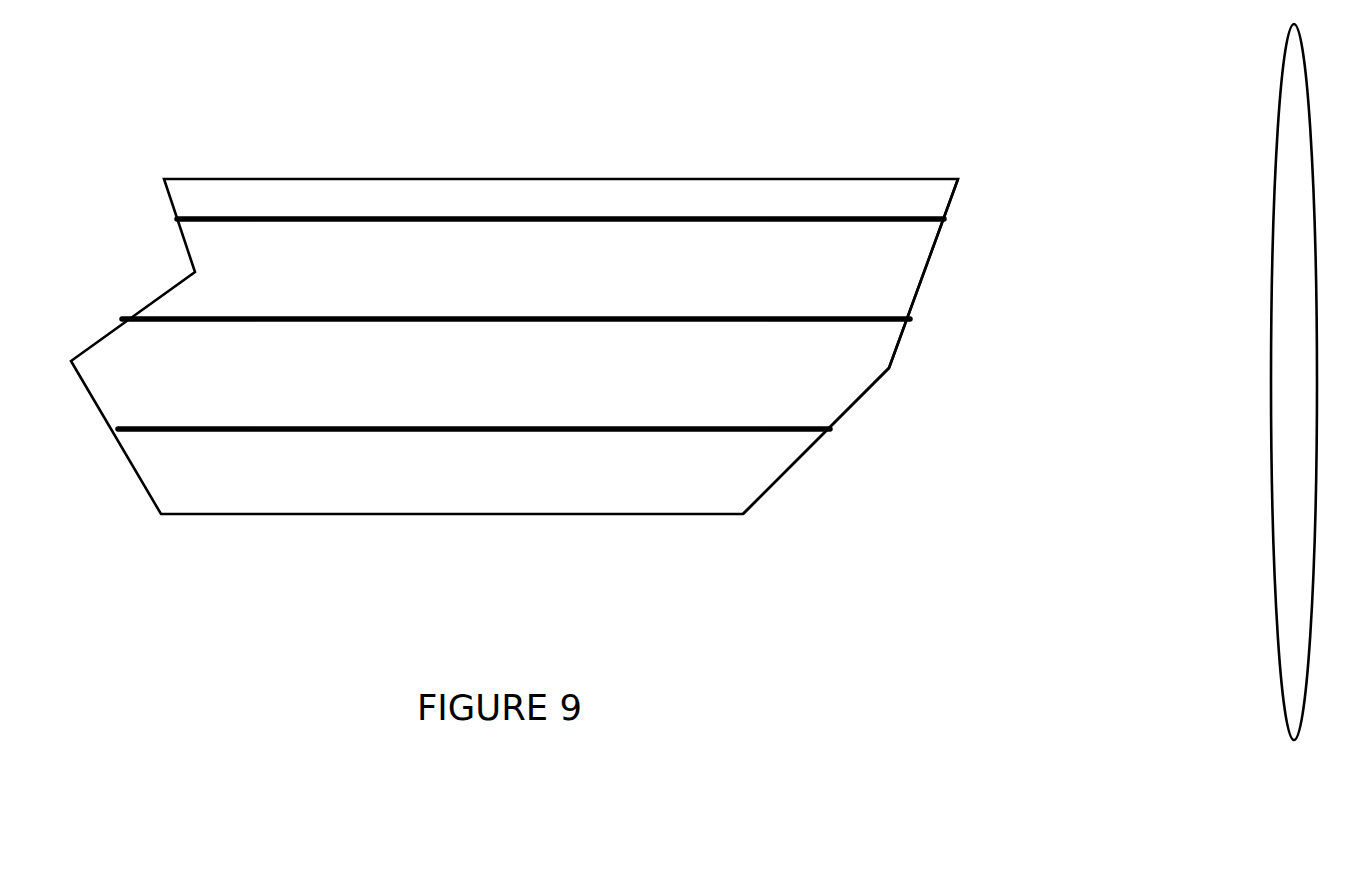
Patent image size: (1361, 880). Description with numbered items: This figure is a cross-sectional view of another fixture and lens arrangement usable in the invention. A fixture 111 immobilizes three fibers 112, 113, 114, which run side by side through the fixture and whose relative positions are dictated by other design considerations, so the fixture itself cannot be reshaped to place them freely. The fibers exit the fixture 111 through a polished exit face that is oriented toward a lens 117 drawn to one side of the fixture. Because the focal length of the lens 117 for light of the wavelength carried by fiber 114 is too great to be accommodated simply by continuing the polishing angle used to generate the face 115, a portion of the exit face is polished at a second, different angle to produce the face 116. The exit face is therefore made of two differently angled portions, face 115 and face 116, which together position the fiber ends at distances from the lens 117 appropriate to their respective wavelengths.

The fixture 111 is at (708, 178).
The fiber 112 is at (455, 222).
The fiber 113 is at (430, 323).
The fiber 114 is at (543, 433).
The face 115 is at (918, 292).
The face 116 is at (847, 412).
The lens 117 is at (1285, 665).